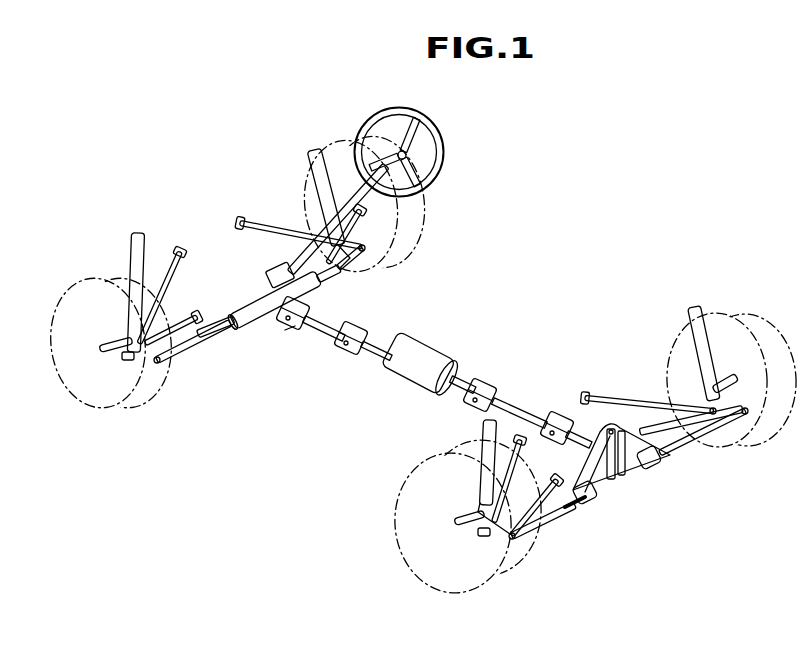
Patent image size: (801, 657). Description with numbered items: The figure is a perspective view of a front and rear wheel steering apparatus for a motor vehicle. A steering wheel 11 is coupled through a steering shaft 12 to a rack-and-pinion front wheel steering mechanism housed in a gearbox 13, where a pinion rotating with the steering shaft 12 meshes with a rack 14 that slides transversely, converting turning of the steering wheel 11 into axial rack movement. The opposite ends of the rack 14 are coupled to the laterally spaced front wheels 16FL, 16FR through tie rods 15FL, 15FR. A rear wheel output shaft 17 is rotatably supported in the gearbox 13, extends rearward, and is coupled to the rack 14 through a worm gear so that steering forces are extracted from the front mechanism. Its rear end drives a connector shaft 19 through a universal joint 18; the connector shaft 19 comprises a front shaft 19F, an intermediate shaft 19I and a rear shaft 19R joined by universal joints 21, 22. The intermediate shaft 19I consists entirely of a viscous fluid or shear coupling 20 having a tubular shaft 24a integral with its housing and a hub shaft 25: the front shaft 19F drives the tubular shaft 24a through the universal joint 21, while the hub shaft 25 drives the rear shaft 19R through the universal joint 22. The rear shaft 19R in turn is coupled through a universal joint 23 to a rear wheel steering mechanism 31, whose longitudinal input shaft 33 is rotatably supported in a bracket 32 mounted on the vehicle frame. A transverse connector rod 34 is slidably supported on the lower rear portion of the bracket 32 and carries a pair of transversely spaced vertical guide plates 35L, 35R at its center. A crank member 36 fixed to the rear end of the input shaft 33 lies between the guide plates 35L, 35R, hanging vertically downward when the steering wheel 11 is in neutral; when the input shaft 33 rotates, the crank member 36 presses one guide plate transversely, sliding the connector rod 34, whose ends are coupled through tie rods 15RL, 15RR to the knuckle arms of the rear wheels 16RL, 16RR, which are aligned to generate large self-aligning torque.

The steering wheel 11 is at (431, 124).
The steering shaft 12 is at (333, 178).
The gearbox 13 is at (254, 296).
The rack 14 is at (220, 322).
The tie rod 15FR is at (362, 262).
The tie rod 15FL is at (184, 345).
The tie rod 15RR is at (733, 428).
The tie rod 15RL is at (551, 522).
The front wheel 16FR is at (415, 234).
The front wheel 16FL is at (104, 398).
The rear wheel 16RR is at (783, 292).
The rear wheel 16RL is at (418, 556).
The rear wheel output shaft 17 is at (286, 322).
The universal joint 18 is at (288, 334).
The front shaft 19F is at (320, 338).
The connector shaft 19 is at (506, 402).
The rear shaft 19R is at (534, 418).
The intermediate shaft 19I is at (324, 438).
The viscous fluid coupling 20 is at (398, 391).
The universal joint 21 is at (362, 332).
The universal joint 22 is at (481, 382).
The universal joint 23 is at (566, 418).
The tubular shaft 24a is at (368, 350).
The hub shaft 25 is at (453, 386).
The rear wheel steering mechanism 31 is at (660, 506).
The bracket 32 is at (580, 463).
The input shaft 33 is at (588, 430).
The connector rod 34 is at (660, 461).
The guide plate 35R is at (644, 470).
The guide plate 35L is at (604, 495).
The crank member 36 is at (618, 478).